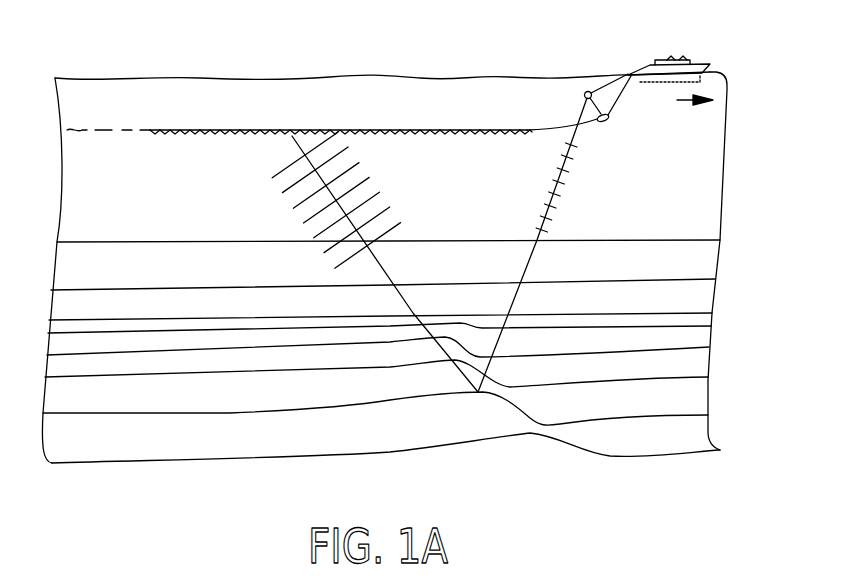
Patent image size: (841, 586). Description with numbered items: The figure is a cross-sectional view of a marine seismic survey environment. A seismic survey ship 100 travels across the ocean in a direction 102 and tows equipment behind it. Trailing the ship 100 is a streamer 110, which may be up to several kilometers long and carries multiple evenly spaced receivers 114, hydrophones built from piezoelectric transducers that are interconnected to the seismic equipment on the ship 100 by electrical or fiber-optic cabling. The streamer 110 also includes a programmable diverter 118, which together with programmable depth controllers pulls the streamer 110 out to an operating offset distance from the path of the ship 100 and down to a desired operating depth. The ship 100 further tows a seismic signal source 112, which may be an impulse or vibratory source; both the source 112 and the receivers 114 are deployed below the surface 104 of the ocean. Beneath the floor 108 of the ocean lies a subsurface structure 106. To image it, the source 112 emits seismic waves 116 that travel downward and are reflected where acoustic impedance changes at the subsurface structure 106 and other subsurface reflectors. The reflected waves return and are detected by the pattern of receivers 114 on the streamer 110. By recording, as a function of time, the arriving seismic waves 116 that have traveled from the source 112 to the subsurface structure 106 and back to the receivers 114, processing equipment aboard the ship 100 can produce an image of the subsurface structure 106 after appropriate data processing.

The seismic survey ship 100 is at (650, 63).
The direction 102 is at (680, 102).
The surface of the ocean 104 is at (405, 78).
The subsurface structure 106 is at (500, 398).
The floor of the ocean 108 is at (638, 240).
The streamer 110 is at (620, 104).
The seismic signal source 112 is at (585, 92).
The receiver 114 is at (184, 131).
The seismic waves 116 is at (553, 193).
The programmable diverter 118 is at (604, 123).